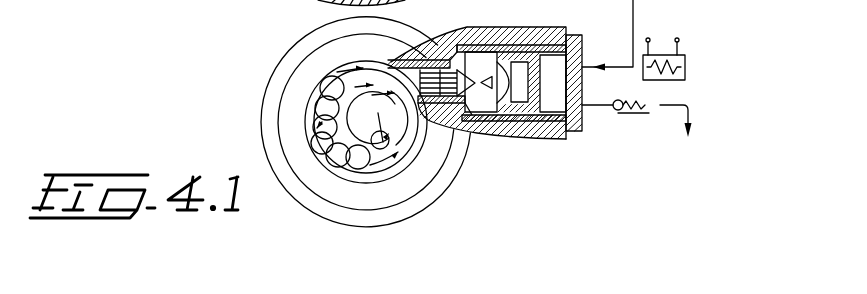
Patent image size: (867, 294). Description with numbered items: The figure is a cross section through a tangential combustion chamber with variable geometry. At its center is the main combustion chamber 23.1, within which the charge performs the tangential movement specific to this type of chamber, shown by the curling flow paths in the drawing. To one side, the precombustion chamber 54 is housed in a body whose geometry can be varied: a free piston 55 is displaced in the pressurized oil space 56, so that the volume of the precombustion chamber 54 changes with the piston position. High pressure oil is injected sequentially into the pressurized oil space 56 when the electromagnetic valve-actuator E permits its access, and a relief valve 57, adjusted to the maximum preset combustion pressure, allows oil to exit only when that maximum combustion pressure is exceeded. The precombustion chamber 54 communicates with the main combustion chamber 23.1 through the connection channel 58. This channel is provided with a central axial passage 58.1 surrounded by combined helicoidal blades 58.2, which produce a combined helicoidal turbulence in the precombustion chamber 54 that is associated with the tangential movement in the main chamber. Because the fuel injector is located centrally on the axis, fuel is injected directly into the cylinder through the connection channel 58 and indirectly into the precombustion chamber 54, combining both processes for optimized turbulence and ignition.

The main combustion chamber 23.1 is at (353, 117).
The precombustion chamber 54 is at (481, 57).
The free piston 55 is at (553, 139).
The pressurized oil space 56 is at (581, 38).
The relief valve 57 is at (630, 113).
The connection channel 58 is at (470, 115).
The central axial passage 58.1 is at (440, 100).
The combined helicoidal blades 58.2 is at (460, 106).
The electromagnetic valve-actuator E is at (633, 40).